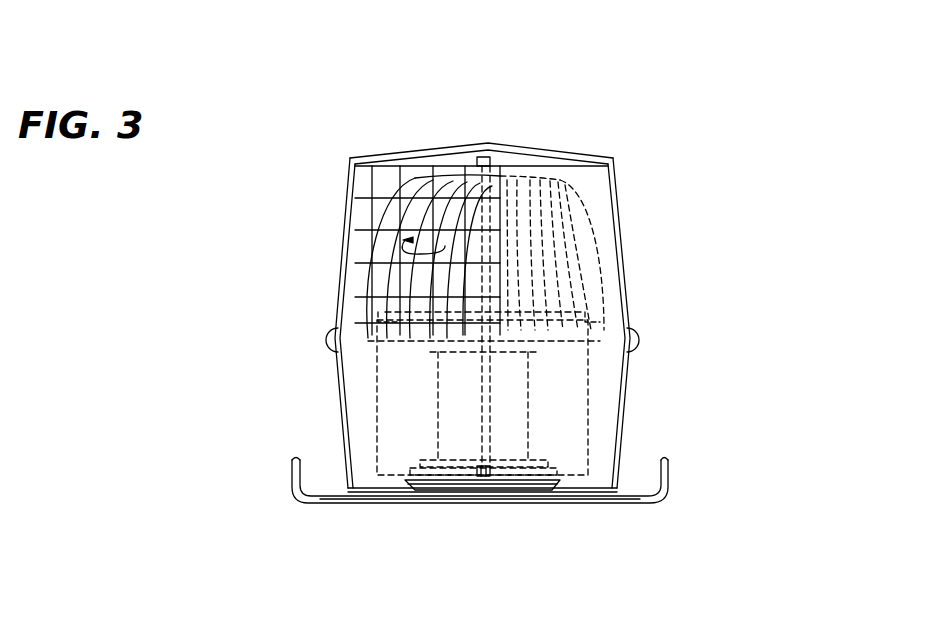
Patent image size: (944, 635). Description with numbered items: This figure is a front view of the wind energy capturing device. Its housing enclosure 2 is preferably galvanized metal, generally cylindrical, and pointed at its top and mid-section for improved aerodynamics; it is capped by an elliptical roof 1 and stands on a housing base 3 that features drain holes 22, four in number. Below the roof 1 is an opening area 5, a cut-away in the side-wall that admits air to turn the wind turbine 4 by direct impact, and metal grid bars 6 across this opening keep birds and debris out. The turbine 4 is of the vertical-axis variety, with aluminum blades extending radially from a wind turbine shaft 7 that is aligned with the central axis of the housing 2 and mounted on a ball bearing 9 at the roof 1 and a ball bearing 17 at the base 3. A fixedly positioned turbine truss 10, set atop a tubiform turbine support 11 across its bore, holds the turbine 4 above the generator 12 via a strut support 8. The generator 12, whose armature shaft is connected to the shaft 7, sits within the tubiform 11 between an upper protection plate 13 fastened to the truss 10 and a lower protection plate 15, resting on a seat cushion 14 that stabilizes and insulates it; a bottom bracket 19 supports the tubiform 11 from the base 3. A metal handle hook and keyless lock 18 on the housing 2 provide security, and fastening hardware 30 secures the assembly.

The roof 1 is at (437, 157).
The housing enclosure 2 is at (620, 200).
The housing base 3 is at (563, 490).
The wind turbine 4 is at (377, 282).
The opening area 5 is at (484, 230).
The metal grid bars 6 is at (342, 162).
The wind turbine shaft 7 is at (490, 180).
The rotated turbine strut support 8 is at (570, 310).
The ball bearing 9 is at (485, 197).
The turbine truss 10 is at (378, 315).
The tubiform turbine support 11 is at (590, 358).
The generator 12 is at (535, 385).
The protection plate 13 is at (513, 352).
The seat cushion 14 is at (445, 470).
The protection plate 15 is at (405, 480).
The ball bearing 17 is at (490, 472).
The metal handle hook and keyless lock 18 is at (330, 340).
The bottom bracket 19 is at (383, 493).
The drain holes 22 is at (632, 495).
The fastening hardware 30 is at (423, 505).